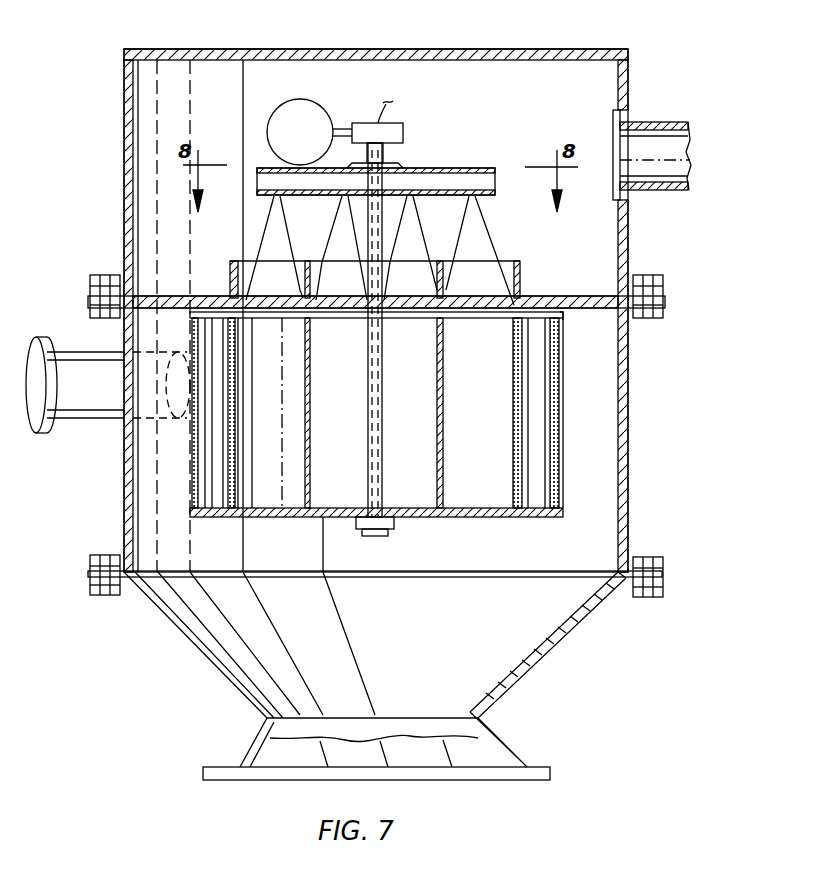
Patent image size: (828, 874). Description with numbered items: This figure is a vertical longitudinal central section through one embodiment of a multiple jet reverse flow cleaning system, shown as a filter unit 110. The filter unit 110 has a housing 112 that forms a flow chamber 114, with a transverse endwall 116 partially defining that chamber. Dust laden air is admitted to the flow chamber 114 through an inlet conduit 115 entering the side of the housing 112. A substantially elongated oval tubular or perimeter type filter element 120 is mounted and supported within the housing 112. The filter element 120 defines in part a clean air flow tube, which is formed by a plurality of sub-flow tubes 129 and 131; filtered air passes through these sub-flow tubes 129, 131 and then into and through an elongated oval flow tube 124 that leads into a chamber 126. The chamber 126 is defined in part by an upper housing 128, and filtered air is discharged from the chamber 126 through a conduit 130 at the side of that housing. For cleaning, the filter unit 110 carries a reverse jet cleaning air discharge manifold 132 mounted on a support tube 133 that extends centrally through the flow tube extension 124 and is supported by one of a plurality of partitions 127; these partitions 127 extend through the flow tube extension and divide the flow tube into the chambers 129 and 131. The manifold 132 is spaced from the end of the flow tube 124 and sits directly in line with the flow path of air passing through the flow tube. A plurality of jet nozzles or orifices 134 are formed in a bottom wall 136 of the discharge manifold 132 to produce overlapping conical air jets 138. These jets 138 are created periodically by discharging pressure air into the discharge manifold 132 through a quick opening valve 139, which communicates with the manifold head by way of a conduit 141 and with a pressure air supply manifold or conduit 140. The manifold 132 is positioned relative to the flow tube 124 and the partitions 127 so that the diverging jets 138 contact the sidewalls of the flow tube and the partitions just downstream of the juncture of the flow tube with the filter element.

The filter unit 110 is at (650, 366).
The housing 112 is at (630, 432).
The flow chamber 114 is at (598, 446).
The inlet conduit 115 is at (90, 432).
The transverse endwall 116 is at (562, 320).
The filter element 120 is at (563, 472).
The flow tube 124 is at (522, 280).
The chamber 126 is at (514, 126).
The partitions 127 is at (370, 445).
The housing 128 is at (614, 50).
The sub-flow tubes 129 is at (351, 380).
The conduit 130 is at (688, 192).
The sub-flow tubes 131 is at (286, 380).
The reverse jet cleaning air discharge manifold 132 is at (472, 168).
The support tube 133 is at (385, 488).
The jet nozzles 134 is at (272, 200).
The bottom wall 136 is at (284, 198).
The conical air jets 138 is at (252, 240).
The quick opening valve 139 is at (393, 125).
The pressure air supply manifold 140 is at (298, 100).
The conduit 141 is at (395, 158).